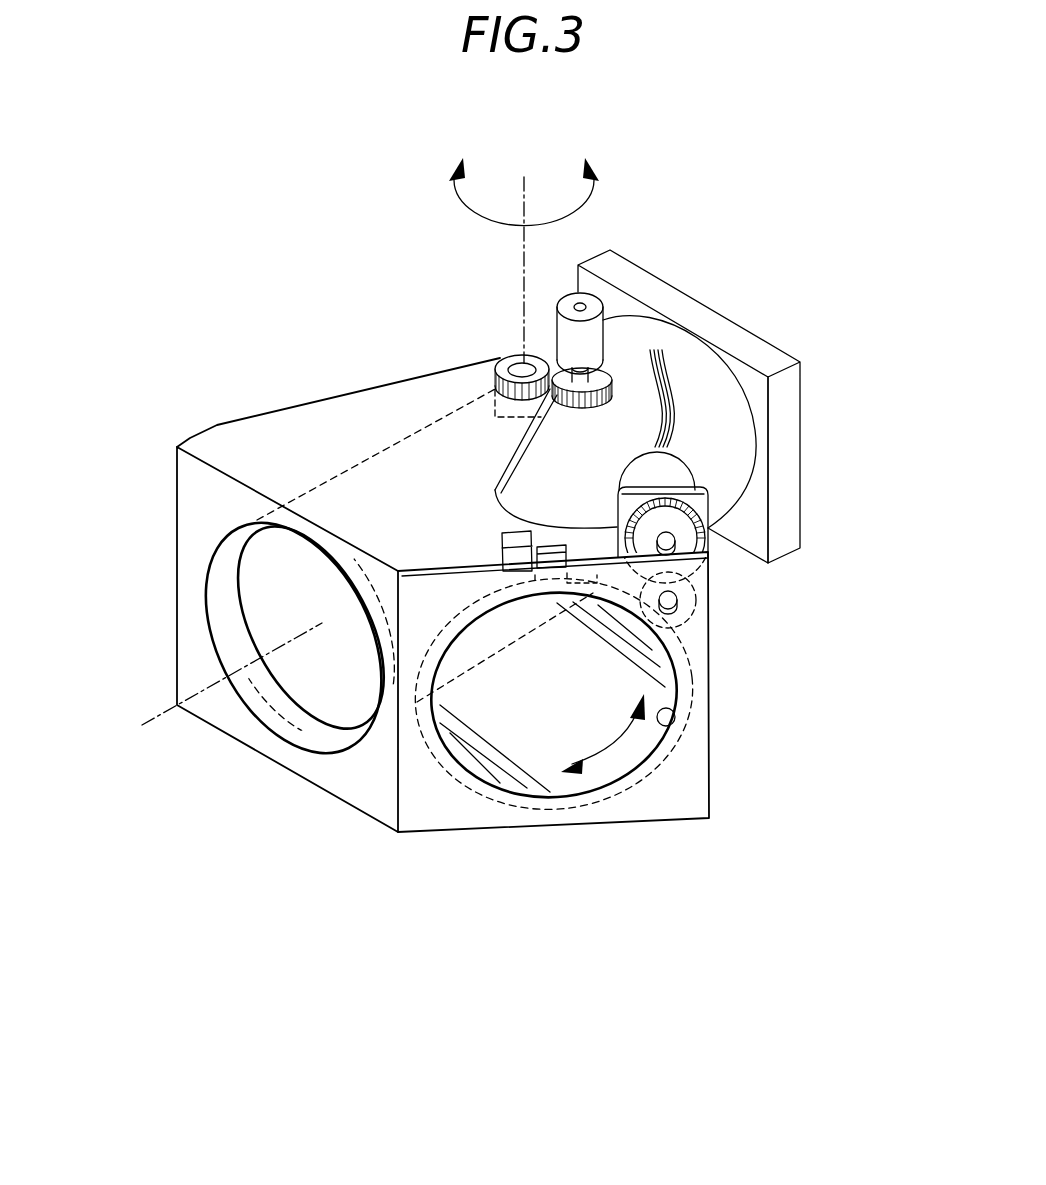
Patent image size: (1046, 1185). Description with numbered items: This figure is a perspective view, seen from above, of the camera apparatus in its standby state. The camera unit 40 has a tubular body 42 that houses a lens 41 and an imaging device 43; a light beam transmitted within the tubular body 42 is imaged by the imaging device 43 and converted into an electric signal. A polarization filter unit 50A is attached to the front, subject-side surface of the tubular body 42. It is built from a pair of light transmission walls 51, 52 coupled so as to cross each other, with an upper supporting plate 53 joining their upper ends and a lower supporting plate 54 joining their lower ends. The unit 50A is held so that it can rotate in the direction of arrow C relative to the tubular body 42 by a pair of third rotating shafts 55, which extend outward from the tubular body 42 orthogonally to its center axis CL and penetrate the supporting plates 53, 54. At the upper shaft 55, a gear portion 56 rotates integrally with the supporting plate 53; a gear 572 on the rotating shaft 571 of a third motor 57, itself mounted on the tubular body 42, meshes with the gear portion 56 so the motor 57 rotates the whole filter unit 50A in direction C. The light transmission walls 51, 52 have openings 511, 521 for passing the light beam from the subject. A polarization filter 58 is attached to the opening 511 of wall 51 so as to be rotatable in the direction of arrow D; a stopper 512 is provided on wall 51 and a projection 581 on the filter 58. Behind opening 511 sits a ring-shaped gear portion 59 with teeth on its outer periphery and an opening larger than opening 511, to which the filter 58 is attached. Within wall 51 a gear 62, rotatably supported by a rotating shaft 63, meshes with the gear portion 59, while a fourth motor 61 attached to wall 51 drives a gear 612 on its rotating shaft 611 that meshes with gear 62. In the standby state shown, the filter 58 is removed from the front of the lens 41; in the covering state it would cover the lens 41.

The camera unit 40 is at (366, 878).
The polarization filter unit 50A is at (734, 806).
The light transmission wall 51 is at (663, 807).
The light transmission wall 52 is at (335, 783).
The supporting plate 53 is at (350, 407).
The opening 511 is at (680, 727).
The stopper 512 is at (514, 535).
The projection 581 is at (553, 547).
The polarization filter 58 is at (563, 782).
The ring-shaped gear portion 59 is at (450, 778).
The opening 521 is at (217, 568).
The supporting plate 54 is at (228, 726).
The lens 41 is at (307, 707).
The center axis (imaging axis line) CL is at (177, 711).
The arrow C is at (480, 213).
The arrow D is at (615, 768).
The third rotating shaft 55 is at (513, 371).
The gear portion 56 is at (510, 400).
The third motor 57 is at (568, 300).
The rotating shaft 571 is at (609, 380).
The gear 572 is at (603, 390).
The tubular body 42 is at (641, 320).
The imaging device 43 is at (733, 337).
The fourth motor (polarization filter driving unit) 61 is at (686, 466).
The gear 612 is at (686, 514).
The rotating shaft 611 is at (670, 546).
The gear 62 is at (704, 609).
The rotating shaft 63 is at (670, 603).